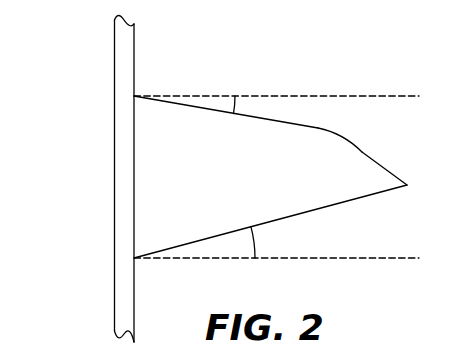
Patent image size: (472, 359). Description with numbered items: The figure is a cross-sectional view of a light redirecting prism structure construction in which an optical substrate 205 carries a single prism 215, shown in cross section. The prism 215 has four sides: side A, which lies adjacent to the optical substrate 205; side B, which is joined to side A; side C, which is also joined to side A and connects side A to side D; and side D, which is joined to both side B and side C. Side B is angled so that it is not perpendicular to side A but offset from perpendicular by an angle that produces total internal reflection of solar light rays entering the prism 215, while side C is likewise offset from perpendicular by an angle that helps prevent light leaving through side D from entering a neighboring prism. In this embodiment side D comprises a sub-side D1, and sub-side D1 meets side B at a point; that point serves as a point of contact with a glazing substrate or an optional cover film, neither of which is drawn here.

The optical substrate 205 is at (123, 47).
The prism 215 is at (248, 155).
The side A is at (134, 174).
The side B is at (356, 199).
The side C is at (195, 107).
The side D is at (337, 134).
The sub-side D1 is at (394, 175).